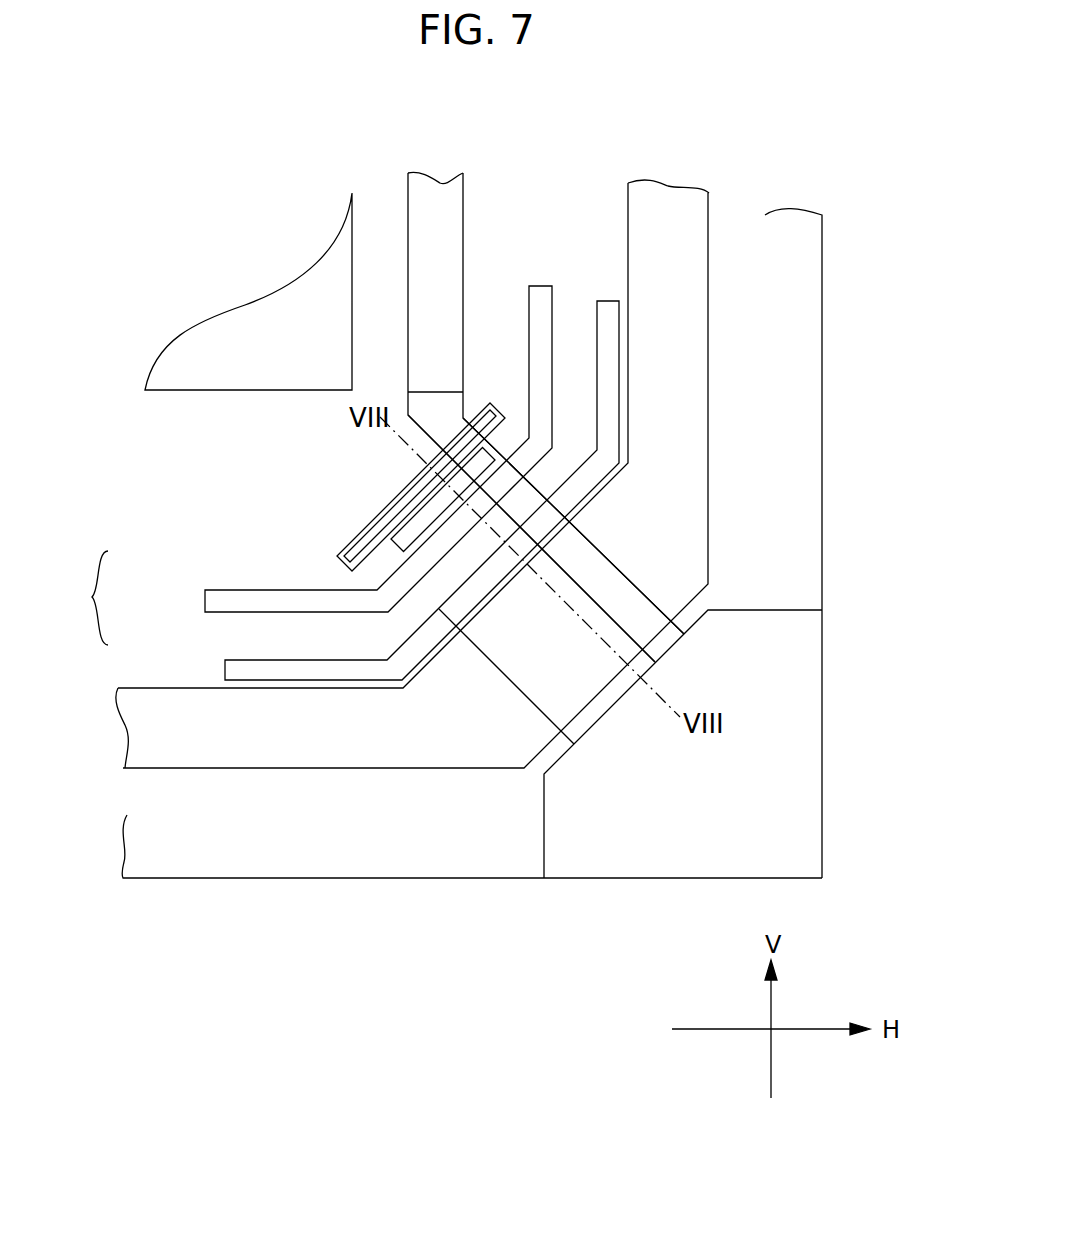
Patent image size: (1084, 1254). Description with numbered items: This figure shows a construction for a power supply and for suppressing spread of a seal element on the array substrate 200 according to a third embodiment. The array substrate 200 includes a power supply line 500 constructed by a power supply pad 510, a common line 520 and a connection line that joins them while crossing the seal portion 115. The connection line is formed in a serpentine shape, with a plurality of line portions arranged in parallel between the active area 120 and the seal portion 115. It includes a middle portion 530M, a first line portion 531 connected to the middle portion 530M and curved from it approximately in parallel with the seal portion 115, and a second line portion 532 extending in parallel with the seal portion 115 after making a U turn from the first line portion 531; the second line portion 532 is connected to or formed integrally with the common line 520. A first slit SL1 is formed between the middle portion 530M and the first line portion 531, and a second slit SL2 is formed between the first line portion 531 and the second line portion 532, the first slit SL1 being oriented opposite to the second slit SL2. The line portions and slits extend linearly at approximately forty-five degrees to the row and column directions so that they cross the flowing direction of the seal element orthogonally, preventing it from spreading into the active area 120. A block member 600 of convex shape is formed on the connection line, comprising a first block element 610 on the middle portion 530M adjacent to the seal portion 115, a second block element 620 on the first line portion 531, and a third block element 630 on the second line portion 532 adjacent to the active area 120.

The active area 120 is at (250, 310).
The common line 520 is at (446, 186).
The middle portion 530M is at (512, 514).
The seal portion 115 is at (666, 201).
The power supply line 500 is at (517, 693).
The array substrate 200 is at (823, 331).
The power supply pad 510 is at (805, 680).
The second line portion 532 is at (395, 500).
The first line portion 531 is at (450, 518).
The third block element 630 is at (343, 558).
The second block element 620 is at (205, 598).
The first block element 610 is at (226, 660).
The block member 600 is at (74, 598).
The first slit SL1 is at (422, 607).
The second slit SL2 is at (503, 446).